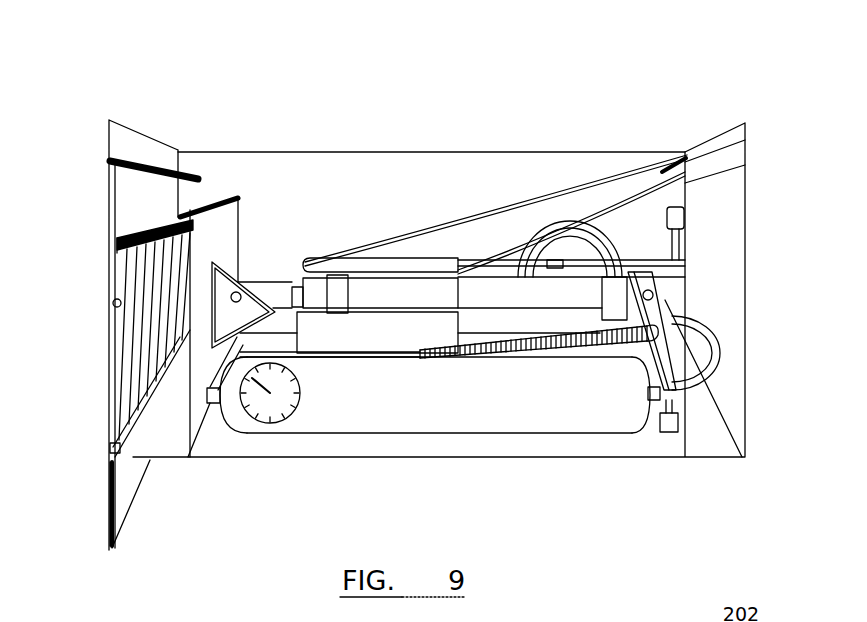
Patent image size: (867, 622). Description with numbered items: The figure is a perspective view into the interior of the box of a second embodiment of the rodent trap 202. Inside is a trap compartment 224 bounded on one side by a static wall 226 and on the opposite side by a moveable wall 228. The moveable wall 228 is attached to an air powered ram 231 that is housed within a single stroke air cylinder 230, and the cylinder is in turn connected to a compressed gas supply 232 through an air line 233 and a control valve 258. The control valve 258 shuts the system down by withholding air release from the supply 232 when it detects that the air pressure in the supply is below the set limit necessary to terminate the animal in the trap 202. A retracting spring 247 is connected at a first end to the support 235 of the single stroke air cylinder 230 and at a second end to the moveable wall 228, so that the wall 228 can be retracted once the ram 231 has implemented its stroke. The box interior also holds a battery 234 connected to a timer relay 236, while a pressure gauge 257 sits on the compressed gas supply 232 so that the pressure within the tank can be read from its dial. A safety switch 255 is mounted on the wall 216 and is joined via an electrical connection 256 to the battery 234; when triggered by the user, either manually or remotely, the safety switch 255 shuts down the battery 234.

The trap 202 is at (652, 98).
The wall 216 is at (538, 176).
The trap compartment 224 is at (166, 435).
The static wall 226 is at (108, 360).
The moveable wall 228 is at (228, 232).
The single stroke air cylinder 230 is at (458, 301).
The air powered ram 231 is at (292, 285).
The compressed gas supply 232 is at (458, 407).
The air line 233 is at (716, 336).
The battery 234 is at (384, 341).
The support 235 is at (681, 361).
The timer relay 236 is at (563, 320).
The retracting spring 247 is at (565, 345).
The safety switch 255 is at (686, 215).
The connection 256 is at (686, 278).
The pressure gauge 257 is at (263, 424).
The control valve 258 is at (672, 433).